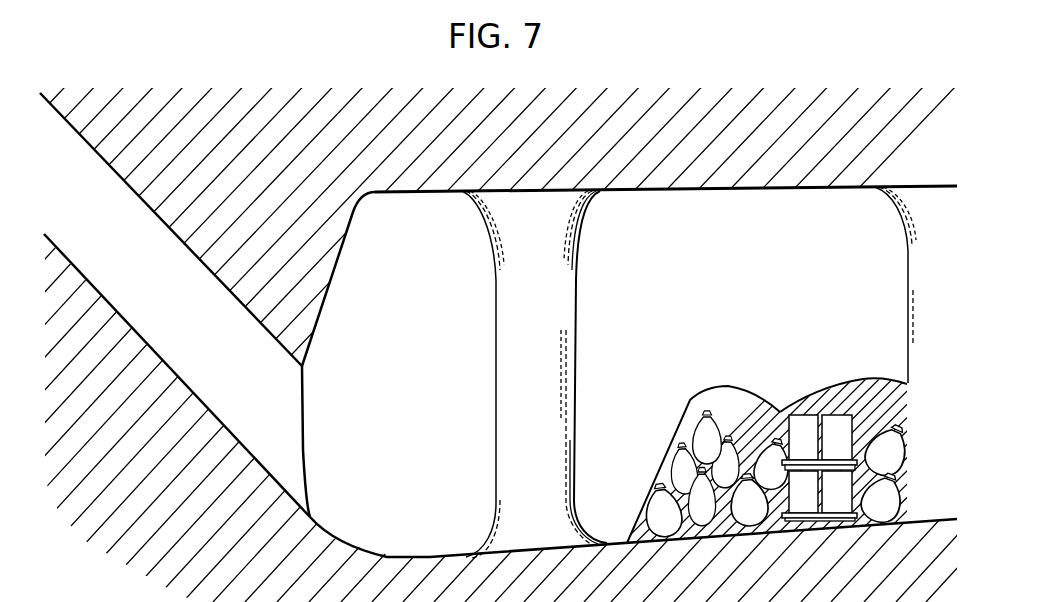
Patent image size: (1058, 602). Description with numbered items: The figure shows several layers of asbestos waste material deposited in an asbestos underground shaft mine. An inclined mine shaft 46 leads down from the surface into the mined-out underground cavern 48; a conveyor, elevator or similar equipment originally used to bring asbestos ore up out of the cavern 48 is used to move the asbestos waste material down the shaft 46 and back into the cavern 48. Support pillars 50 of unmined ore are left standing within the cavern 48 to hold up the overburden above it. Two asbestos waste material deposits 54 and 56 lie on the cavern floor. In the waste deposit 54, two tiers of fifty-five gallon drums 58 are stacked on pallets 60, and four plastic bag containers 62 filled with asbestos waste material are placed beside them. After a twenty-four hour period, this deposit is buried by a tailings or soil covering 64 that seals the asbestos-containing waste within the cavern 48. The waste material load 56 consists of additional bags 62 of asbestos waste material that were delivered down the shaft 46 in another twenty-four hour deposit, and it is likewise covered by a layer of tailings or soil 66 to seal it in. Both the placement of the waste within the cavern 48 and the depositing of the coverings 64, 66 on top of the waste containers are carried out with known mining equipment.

The mine shaft 46 is at (208, 347).
The underground cavern 48 is at (412, 250).
The support pillars 50 is at (578, 250).
The asbestos waste material deposit 54 is at (818, 528).
The waste material load 56 is at (672, 550).
The 55 gallon drums 58 is at (808, 422).
The pallets 60 is at (783, 416).
The plastic bag containers 62 is at (700, 437).
The tailings or soil covering 64 is at (866, 380).
The layer of tailings or soil 66 is at (638, 477).